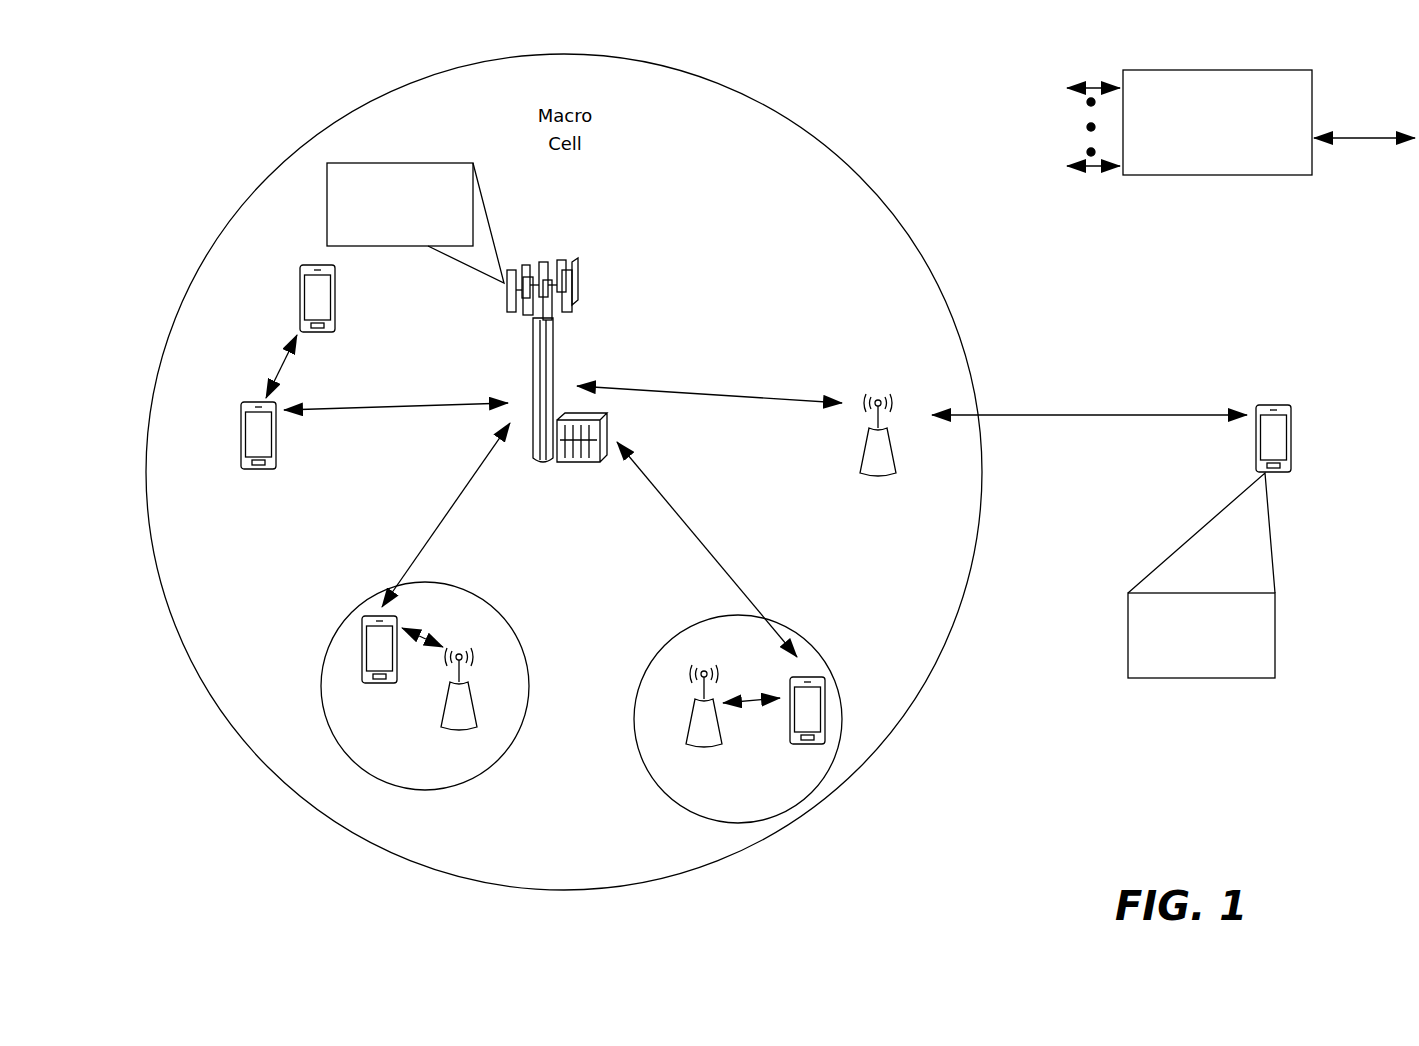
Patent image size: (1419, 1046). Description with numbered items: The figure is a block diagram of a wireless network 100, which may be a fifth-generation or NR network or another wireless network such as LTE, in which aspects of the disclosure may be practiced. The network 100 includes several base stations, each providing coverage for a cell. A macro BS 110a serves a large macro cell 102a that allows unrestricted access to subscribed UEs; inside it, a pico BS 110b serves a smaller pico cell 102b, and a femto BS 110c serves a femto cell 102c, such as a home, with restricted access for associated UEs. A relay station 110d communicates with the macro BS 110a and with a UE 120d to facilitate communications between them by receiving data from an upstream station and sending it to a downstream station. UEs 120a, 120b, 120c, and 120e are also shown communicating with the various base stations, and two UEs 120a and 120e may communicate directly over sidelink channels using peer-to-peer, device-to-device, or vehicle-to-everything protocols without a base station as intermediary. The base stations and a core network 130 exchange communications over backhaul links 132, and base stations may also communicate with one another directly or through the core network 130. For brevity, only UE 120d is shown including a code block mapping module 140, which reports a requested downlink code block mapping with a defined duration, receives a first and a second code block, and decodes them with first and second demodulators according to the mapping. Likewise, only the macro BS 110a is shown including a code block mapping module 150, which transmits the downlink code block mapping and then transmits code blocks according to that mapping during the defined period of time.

The wireless network 100 is at (227, 98).
The macro cell 102a is at (838, 160).
The pico cell 102b is at (513, 622).
The femto cell 102c is at (678, 632).
The macro BS 110a is at (551, 252).
The pico BS 110b is at (480, 708).
The femto BS 110c is at (687, 727).
The relay station 110d is at (878, 395).
The UE 120a is at (241, 430).
The UE 120b is at (367, 685).
The UE 120c is at (800, 746).
The UE 120d is at (1292, 473).
The UE 120e is at (300, 285).
The core network 130 is at (1190, 68).
The backhaul links 132 is at (1090, 85).
The code block mapping module 140 is at (1202, 680).
The code block mapping module 150 is at (403, 247).